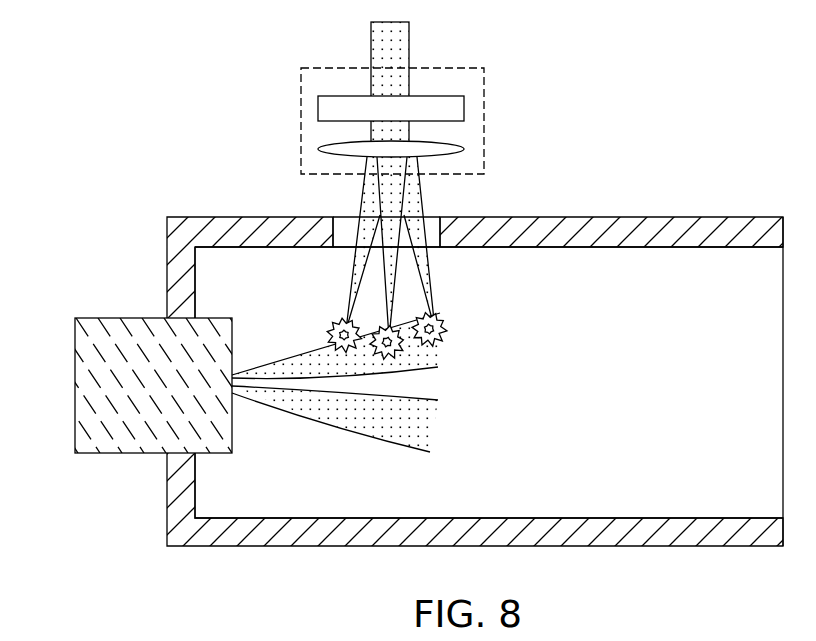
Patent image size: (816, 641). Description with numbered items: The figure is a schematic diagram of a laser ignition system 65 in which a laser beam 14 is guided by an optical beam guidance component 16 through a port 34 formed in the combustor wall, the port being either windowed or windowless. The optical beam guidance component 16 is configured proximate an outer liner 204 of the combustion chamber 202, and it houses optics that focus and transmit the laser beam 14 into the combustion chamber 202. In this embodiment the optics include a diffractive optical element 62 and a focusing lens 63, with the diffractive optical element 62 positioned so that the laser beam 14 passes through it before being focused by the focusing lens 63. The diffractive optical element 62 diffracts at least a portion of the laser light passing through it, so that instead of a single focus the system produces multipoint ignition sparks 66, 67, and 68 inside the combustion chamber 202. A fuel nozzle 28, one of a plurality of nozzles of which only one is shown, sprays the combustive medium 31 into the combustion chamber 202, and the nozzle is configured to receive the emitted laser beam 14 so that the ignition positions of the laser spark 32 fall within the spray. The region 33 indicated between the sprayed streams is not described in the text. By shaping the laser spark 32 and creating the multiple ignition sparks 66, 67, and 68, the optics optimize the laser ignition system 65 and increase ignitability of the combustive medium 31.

The laser beam 14 is at (410, 33).
The optical beam guidance component 16 is at (406, 121).
The diffractive optical element 62 is at (318, 111).
The focusing lens 63 is at (318, 150).
The port 34 is at (347, 223).
The outer liner 204 is at (713, 217).
The combustion chamber 202 is at (712, 393).
The laser ignition system 65 is at (475, 291).
The fuel nozzle 28 is at (75, 378).
The laser spark 32 is at (293, 357).
The combustive medium 31 is at (350, 432).
The gap between plumes 33 is at (393, 378).
The ignition spark 66 is at (333, 323).
The ignition spark 67 is at (400, 367).
The ignition spark 68 is at (442, 315).